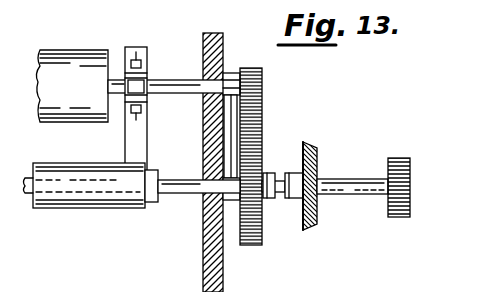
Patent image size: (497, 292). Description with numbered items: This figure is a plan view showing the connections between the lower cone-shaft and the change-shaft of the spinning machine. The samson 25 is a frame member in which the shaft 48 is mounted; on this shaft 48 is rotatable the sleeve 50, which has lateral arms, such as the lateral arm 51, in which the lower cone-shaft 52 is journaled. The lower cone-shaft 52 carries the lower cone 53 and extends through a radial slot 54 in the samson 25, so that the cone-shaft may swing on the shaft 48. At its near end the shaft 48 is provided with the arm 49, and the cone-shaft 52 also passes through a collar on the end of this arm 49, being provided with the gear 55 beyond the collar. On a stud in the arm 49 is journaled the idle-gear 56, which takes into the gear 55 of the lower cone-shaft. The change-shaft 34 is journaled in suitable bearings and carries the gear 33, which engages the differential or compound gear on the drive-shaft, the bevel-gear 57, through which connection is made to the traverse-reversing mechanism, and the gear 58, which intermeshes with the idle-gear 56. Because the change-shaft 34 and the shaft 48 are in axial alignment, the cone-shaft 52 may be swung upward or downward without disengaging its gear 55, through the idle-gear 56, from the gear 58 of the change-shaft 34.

The samson 25 is at (215, 259).
The gear 33 is at (410, 164).
The change-shaft 34 is at (355, 173).
The shaft 48 is at (181, 194).
The arm 49 is at (228, 147).
The sleeve 50 is at (86, 209).
The lateral arm 51 is at (131, 137).
The lower cone-shaft 52 is at (186, 93).
The lower cone 53 is at (72, 86).
The radial slot 54 is at (203, 73).
The gear 55 is at (262, 76).
The idle-gear 56 is at (262, 121).
The bevel-gear 57 is at (314, 229).
The gear 58 is at (262, 158).